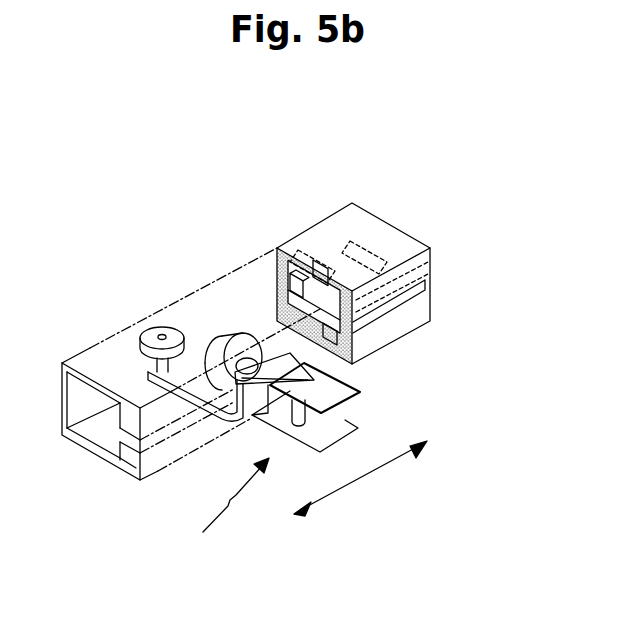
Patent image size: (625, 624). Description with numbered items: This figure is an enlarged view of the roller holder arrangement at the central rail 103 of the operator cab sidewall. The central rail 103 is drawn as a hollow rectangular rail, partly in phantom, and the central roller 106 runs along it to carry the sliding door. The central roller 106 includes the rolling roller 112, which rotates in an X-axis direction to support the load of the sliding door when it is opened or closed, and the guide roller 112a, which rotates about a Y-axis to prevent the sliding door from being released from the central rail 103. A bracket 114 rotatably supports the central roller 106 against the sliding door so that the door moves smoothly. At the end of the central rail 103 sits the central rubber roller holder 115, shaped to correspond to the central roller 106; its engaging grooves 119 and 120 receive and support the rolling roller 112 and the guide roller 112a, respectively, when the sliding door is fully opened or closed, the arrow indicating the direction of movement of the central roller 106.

The central rail 103 is at (129, 470).
The central roller 106 is at (227, 510).
The rolling roller 112 is at (228, 338).
The guide roller 112a is at (150, 334).
The bracket 114 is at (340, 391).
The central rubber roller holder 115 is at (428, 216).
The engaging groove 119 is at (340, 374).
The engaging groove 120 is at (287, 265).